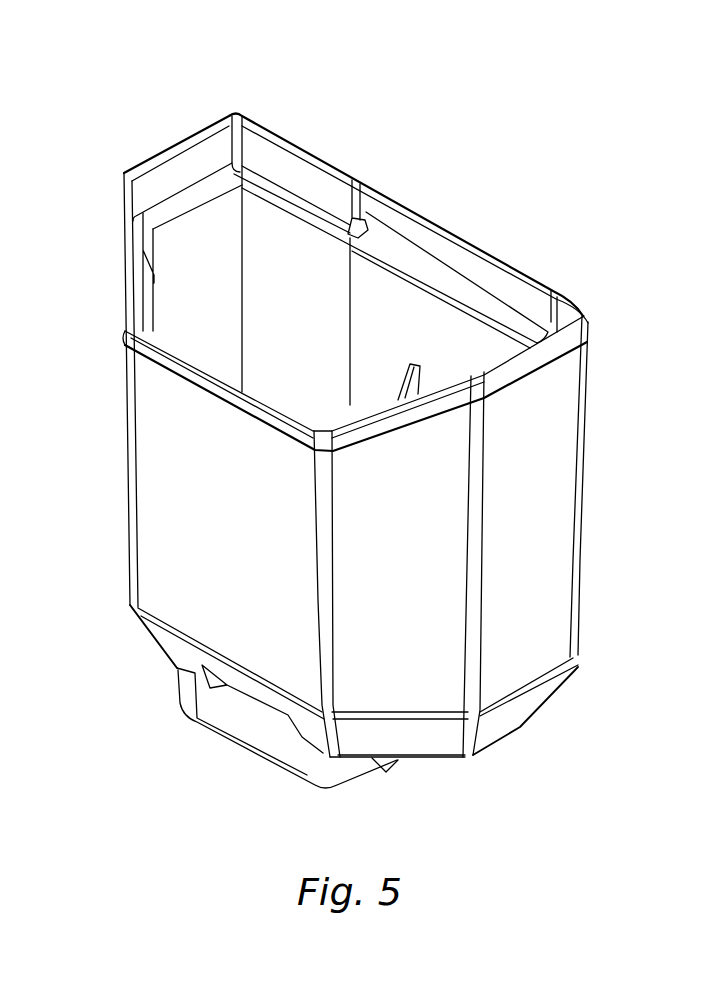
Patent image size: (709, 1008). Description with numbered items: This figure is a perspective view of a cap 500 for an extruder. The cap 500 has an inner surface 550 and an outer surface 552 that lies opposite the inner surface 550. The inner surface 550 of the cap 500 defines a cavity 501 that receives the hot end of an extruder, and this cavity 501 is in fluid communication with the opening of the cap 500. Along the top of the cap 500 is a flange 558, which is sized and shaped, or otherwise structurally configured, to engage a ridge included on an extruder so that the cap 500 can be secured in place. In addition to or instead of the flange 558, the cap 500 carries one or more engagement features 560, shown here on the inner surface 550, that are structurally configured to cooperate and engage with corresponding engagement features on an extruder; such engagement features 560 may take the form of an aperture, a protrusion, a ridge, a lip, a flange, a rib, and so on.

The cap 500 is at (152, 88).
The cavity 501 is at (293, 232).
The inner surface 550 is at (317, 316).
The outer surface 552 is at (248, 534).
The flange 558 is at (272, 183).
The engagement feature 560 is at (399, 366).